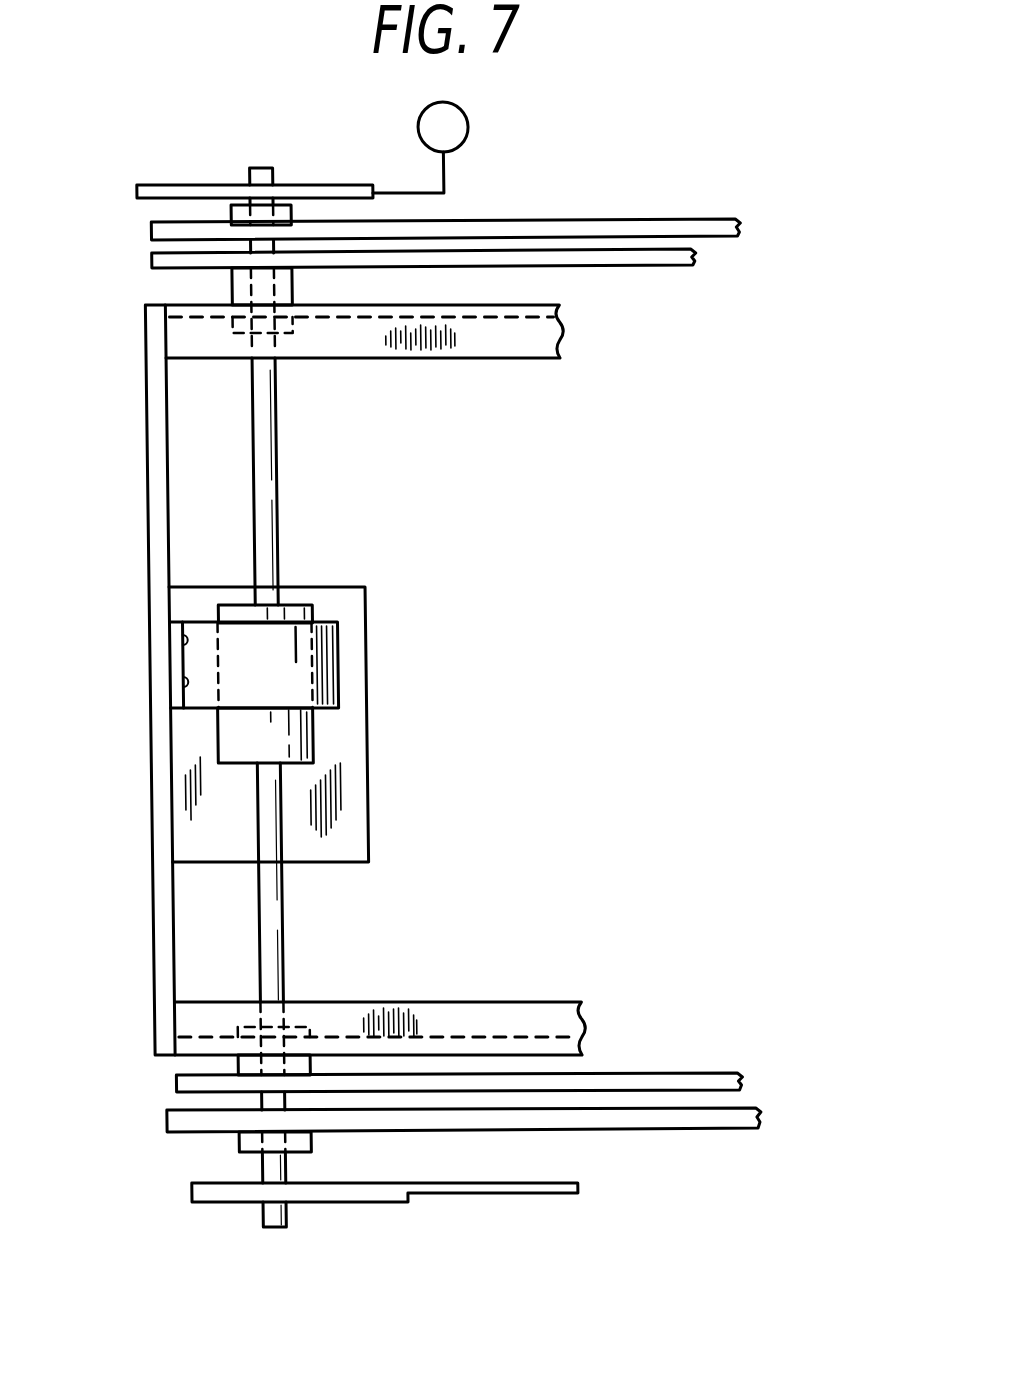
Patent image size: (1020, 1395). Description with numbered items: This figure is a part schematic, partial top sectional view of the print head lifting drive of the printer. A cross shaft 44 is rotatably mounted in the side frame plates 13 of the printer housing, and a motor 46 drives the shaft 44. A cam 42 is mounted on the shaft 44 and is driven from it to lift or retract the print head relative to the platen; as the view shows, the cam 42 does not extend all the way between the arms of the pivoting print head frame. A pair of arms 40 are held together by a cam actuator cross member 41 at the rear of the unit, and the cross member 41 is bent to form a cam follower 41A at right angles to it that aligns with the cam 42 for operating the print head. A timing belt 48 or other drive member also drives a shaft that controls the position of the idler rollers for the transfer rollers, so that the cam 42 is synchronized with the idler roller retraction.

The side frame plates 13 is at (578, 226).
The arms 40 is at (496, 345).
The cam actuator cross member 41 is at (143, 435).
The cam follower 41A is at (352, 695).
The cam 42 is at (285, 743).
The shaft 44 is at (266, 432).
The motor 46 is at (469, 120).
The timing belt 48 is at (504, 1203).